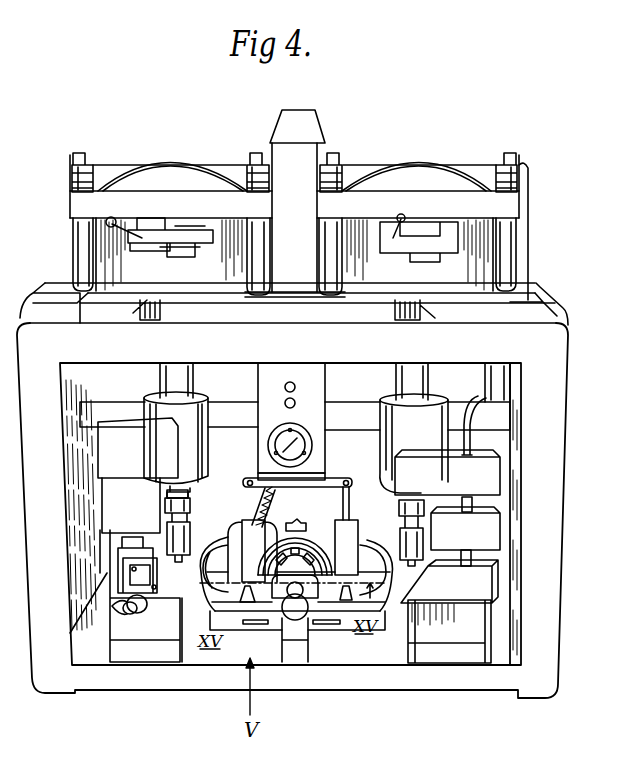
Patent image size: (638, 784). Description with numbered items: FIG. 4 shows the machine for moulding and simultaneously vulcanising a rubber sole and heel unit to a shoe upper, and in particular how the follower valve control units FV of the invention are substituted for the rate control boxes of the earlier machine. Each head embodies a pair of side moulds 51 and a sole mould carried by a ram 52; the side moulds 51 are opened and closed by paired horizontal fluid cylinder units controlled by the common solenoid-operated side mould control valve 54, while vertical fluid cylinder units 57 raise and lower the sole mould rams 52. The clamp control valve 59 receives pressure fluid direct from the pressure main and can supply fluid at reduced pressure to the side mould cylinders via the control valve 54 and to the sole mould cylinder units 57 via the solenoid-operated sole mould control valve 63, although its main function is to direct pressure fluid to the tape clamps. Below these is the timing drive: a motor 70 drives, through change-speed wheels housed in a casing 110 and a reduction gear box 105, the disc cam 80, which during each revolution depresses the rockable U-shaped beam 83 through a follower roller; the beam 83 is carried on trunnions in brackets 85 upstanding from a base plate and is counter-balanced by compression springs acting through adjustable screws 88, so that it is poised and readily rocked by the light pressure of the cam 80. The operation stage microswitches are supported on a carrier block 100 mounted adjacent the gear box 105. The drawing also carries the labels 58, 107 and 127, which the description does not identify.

The side moulds 51 is at (215, 309).
The ram 52 is at (178, 383).
The side mould control valve 54 is at (447, 472).
The vertical fluid cylinder units 57 is at (197, 470).
The valve box 58 is at (138, 475).
The clamp control valve 59 is at (449, 581).
The sole mould control valve 63 is at (472, 543).
The motor 70 is at (266, 524).
The disc cam 80 is at (258, 600).
The rockable beam 83 is at (341, 626).
The brackets 85 is at (224, 540).
The screws 88 is at (243, 612).
The carrier block 100 is at (305, 545).
The reduction gear box 105 is at (298, 520).
The bolt 107 is at (345, 618).
The casing 110 is at (357, 527).
The fitting 127 is at (159, 494).
The follower valve control units FV is at (187, 537).